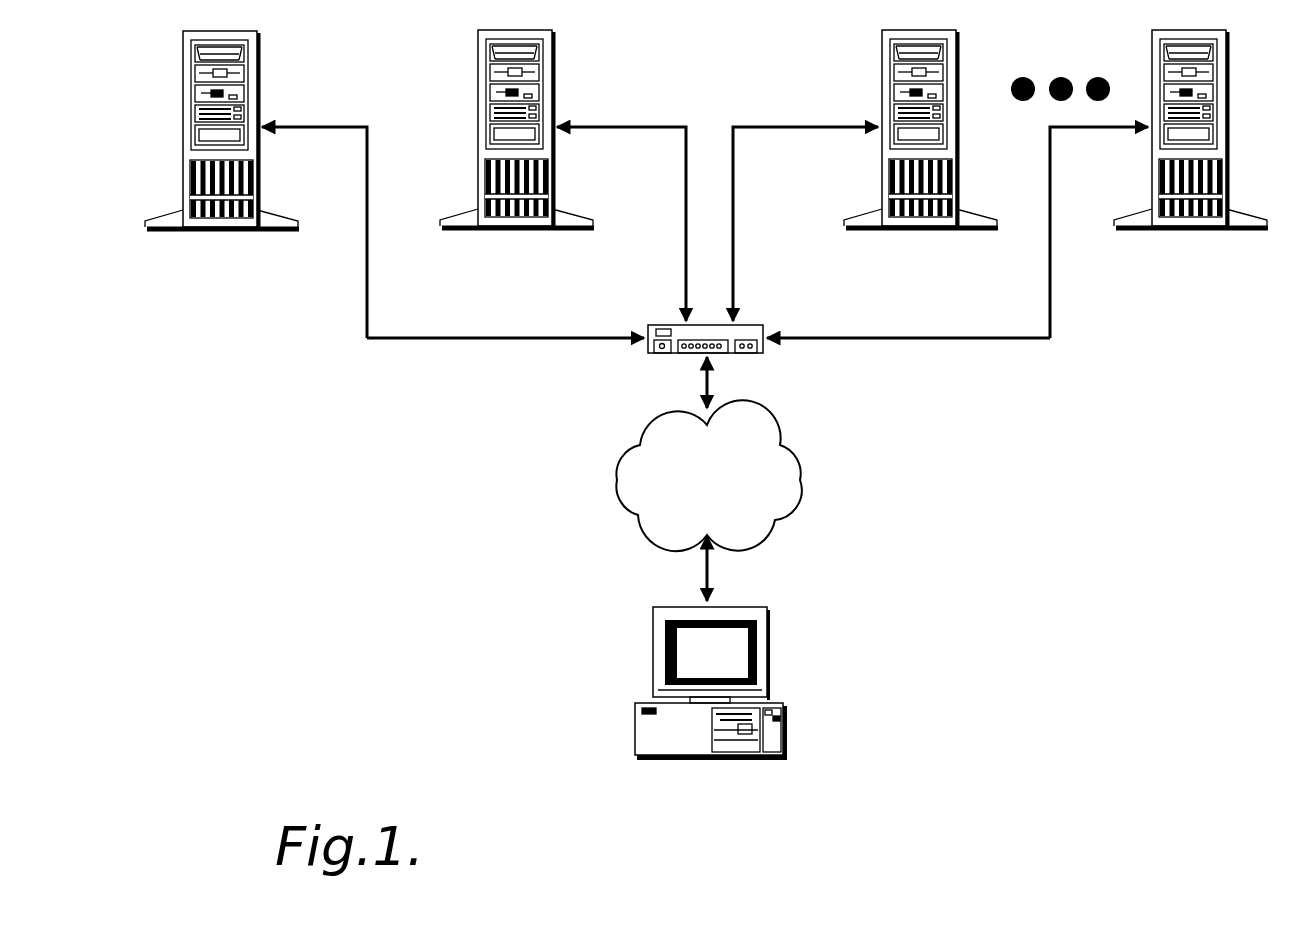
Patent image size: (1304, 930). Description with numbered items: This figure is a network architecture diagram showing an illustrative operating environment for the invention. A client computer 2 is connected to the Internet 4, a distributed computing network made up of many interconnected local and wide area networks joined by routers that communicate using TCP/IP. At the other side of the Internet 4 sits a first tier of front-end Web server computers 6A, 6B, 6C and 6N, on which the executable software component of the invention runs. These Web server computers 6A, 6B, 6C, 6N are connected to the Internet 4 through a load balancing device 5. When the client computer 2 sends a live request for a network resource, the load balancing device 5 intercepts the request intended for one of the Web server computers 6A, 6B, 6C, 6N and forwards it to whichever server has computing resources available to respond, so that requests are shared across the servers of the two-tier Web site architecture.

The client computer 2 is at (780, 740).
The Internet 4 is at (630, 497).
The load balancing device 5 is at (763, 353).
The Web server computer 6A is at (192, 220).
The Web server computer 6B is at (488, 220).
The Web server computer 6C is at (886, 220).
The Web server computer 6N is at (1160, 220).